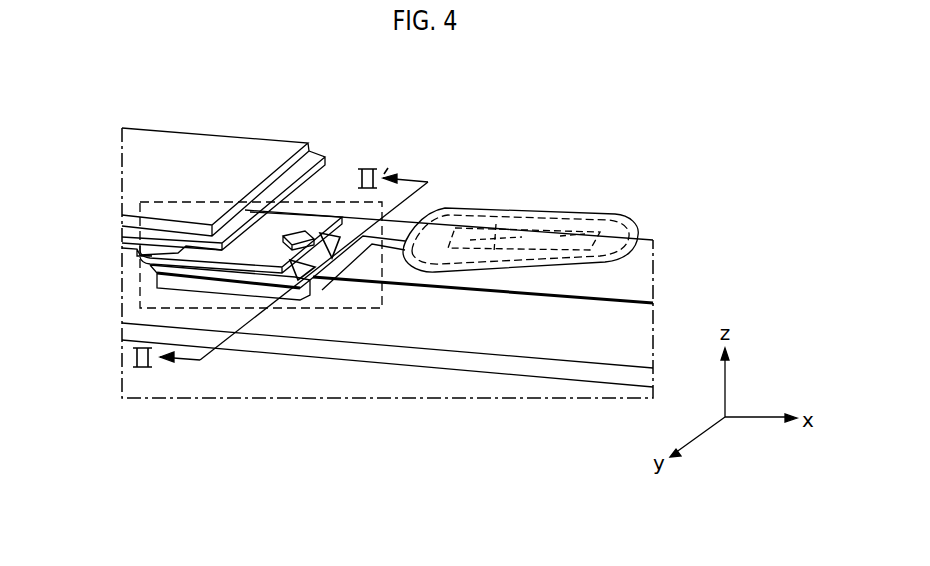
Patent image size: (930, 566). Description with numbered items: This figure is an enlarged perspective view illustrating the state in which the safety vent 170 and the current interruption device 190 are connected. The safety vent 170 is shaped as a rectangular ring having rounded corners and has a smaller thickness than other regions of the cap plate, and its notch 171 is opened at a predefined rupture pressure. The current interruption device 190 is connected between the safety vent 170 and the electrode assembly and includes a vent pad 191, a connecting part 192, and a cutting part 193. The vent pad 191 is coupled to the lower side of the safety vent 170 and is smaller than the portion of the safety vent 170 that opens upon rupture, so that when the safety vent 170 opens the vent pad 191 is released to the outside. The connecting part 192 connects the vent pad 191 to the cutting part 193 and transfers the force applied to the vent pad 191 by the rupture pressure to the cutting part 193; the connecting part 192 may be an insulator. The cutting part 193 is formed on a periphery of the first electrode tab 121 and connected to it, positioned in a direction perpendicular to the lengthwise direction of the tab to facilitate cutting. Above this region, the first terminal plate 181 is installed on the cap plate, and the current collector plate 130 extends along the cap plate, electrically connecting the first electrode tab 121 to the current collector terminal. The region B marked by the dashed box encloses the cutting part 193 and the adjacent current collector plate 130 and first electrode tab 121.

The first electrode tab 121 is at (137, 267).
The current collector plate 130 is at (300, 220).
The safety vent 170 is at (515, 207).
The notch 171 is at (550, 246).
The first terminal plate 181 is at (187, 146).
The current interruption device 190 is at (270, 459).
The vent pad 191 is at (503, 262).
The connecting part 192 is at (393, 258).
The cutting part 193 is at (293, 298).
The region B is at (140, 203).